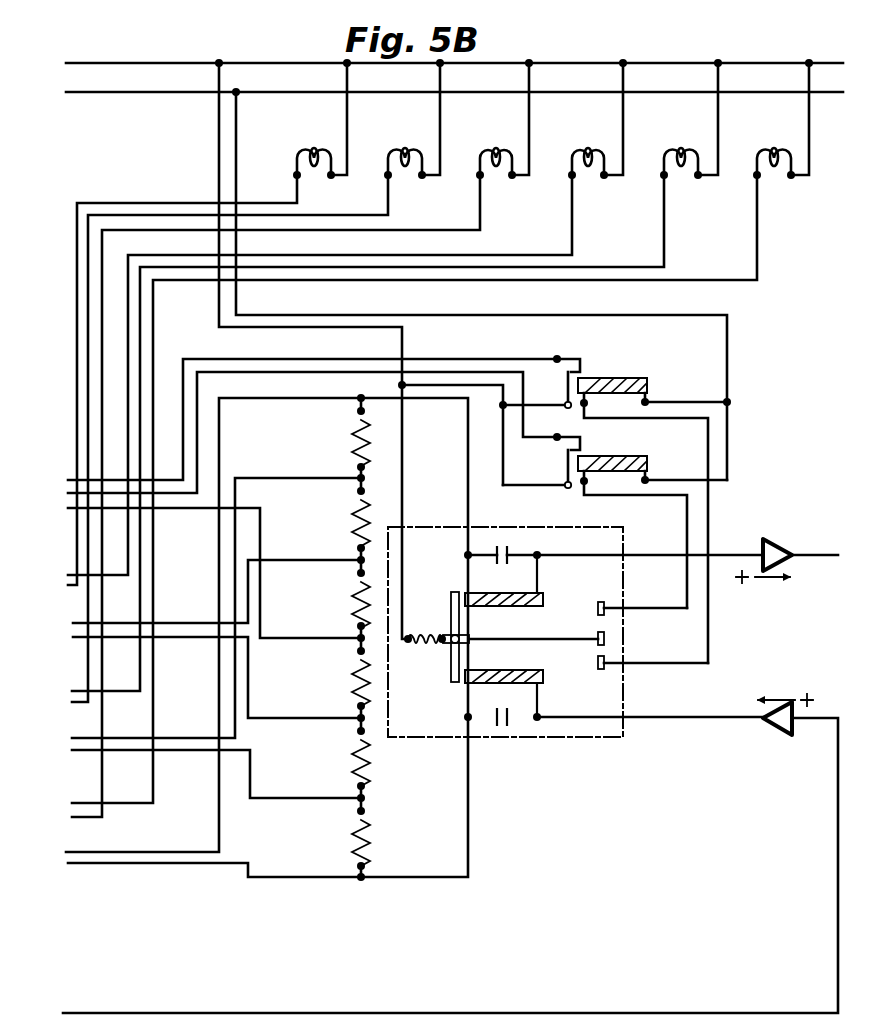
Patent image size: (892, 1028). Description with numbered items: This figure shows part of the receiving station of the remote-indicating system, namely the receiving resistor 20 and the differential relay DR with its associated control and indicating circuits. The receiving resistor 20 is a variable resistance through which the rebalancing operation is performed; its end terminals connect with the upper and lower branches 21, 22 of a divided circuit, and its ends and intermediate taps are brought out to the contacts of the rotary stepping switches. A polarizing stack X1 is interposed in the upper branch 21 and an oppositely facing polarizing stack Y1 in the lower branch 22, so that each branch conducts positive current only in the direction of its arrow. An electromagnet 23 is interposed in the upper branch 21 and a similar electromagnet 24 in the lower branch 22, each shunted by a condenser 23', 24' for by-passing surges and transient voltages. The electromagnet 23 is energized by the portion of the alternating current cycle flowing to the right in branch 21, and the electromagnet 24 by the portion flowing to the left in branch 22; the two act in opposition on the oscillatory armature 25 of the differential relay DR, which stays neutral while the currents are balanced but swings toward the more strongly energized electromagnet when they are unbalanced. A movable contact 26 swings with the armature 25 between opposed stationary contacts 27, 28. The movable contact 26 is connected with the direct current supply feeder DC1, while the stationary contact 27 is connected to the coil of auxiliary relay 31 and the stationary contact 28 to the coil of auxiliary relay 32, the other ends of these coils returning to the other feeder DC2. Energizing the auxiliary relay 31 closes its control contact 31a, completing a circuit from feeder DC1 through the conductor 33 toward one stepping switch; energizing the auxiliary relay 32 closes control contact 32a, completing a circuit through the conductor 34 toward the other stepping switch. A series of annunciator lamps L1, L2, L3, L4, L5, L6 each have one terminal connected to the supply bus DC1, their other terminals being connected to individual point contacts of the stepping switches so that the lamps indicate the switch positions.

The receiving resistor 20 is at (372, 756).
The upper branch 21 is at (468, 491).
The lower branch 22 is at (402, 877).
The electromagnet 23 is at (504, 611).
The condenser 23' is at (510, 549).
The electromagnet 24 is at (504, 665).
The condenser 24' is at (511, 725).
The oscillatory armature 25 is at (451, 669).
The movable contact 26 is at (598, 644).
The stationary contact 27 is at (600, 602).
The stationary contact 28 is at (600, 669).
The auxiliary relay 31 is at (652, 520).
The control contact 31a is at (564, 465).
The auxiliary relay 32 is at (652, 508).
The control contact 32a is at (564, 385).
The conductor 33 is at (232, 372).
The conductor 34 is at (232, 360).
The annunciator lamp L1 is at (207, 324).
The annunciator lamp L2 is at (256, 382).
The annunciator lamp L3 is at (300, 440).
The annunciator lamp L4 is at (345, 319).
The annunciator lamp L5 is at (395, 377).
The annunciator lamp L6 is at (440, 433).
The direct current supply feeder DC1 is at (268, 330).
The direct current supply feeder DC2 is at (264, 316).
The differential relay DR is at (575, 733).
The polarizing stack X1 is at (773, 542).
The polarizing stack Y1 is at (770, 733).